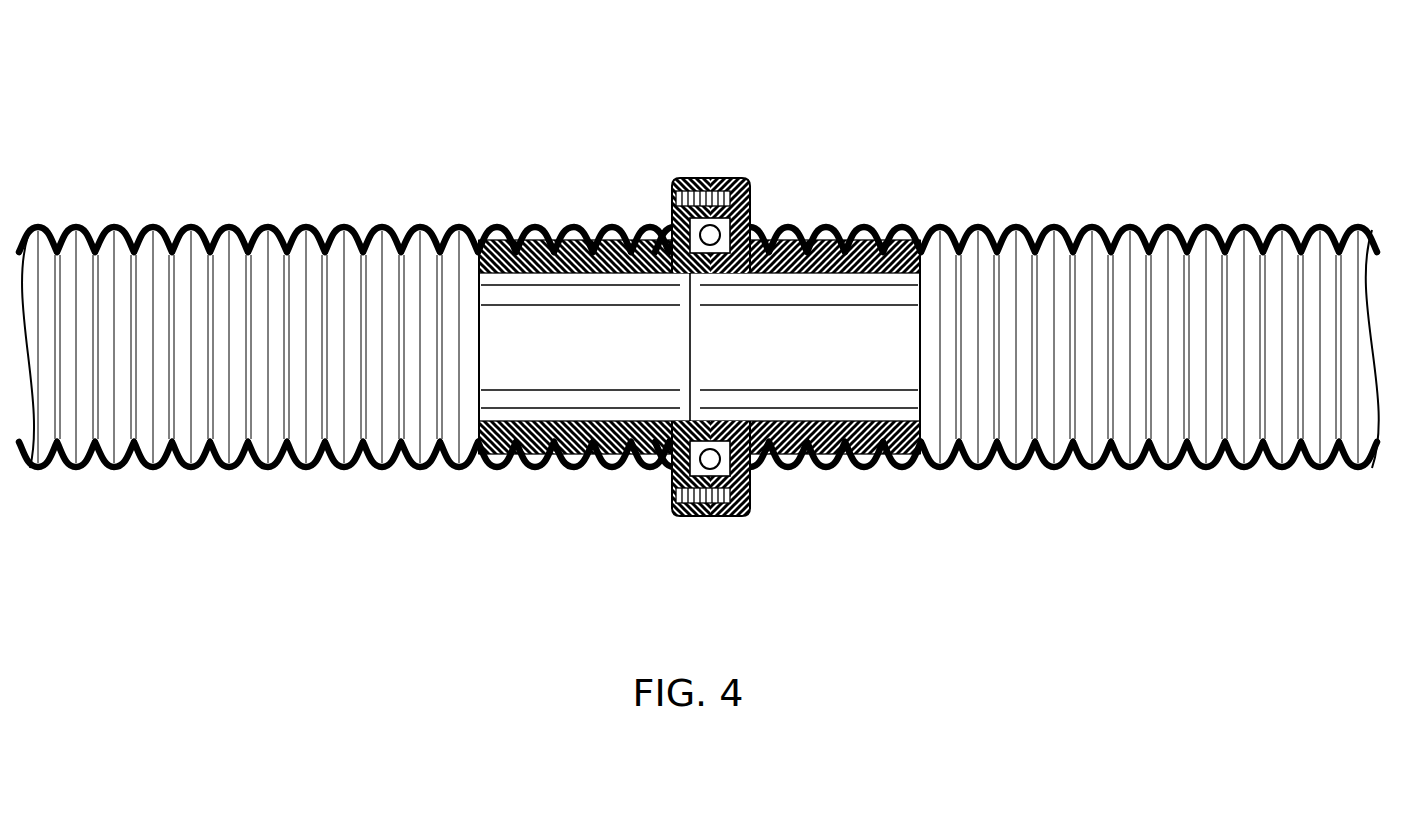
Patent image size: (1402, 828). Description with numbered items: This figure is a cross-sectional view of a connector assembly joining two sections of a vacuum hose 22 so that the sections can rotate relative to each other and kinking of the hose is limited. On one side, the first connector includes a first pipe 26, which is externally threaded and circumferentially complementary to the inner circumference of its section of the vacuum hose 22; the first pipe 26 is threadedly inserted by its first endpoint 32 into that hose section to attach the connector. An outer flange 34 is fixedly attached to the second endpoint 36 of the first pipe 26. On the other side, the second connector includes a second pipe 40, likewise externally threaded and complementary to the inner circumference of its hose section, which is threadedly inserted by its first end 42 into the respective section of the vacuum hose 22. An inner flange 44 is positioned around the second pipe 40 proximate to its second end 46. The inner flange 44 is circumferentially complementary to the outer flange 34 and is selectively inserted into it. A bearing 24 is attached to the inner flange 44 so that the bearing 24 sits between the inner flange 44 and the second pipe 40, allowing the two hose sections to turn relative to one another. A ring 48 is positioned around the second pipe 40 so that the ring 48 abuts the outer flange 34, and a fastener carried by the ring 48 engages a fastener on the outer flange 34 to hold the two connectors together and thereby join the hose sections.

The vacuum hose 22 is at (1163, 228).
The bearing 24 is at (706, 232).
The first pipe 26 is at (565, 245).
The first endpoint 32 is at (480, 343).
The outer flange 34 is at (672, 182).
The second endpoint 36 is at (690, 350).
The second pipe 40 is at (842, 240).
The first end 42 is at (922, 343).
The inner flange 44 is at (724, 518).
The second end 46 is at (690, 350).
The ring 48 is at (750, 180).